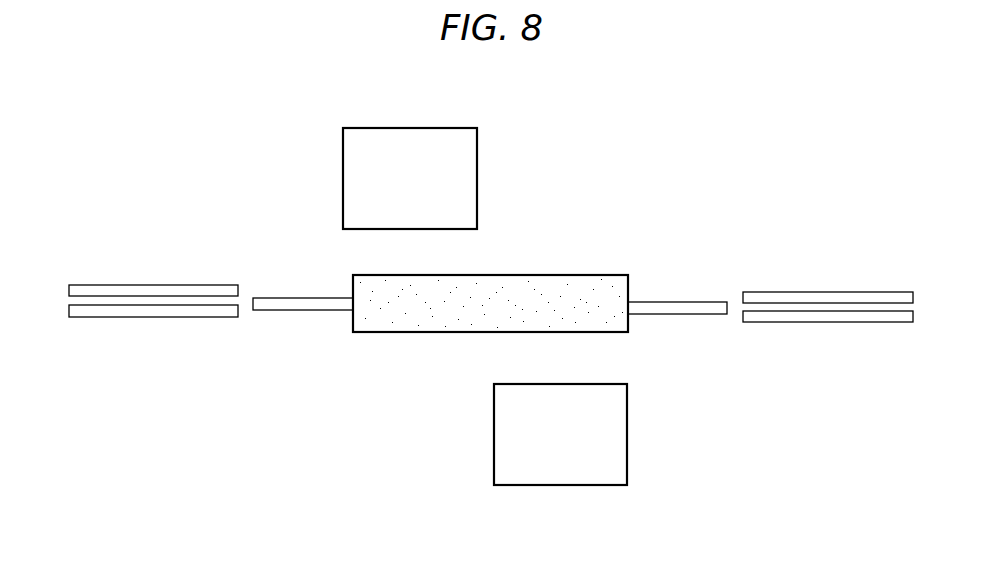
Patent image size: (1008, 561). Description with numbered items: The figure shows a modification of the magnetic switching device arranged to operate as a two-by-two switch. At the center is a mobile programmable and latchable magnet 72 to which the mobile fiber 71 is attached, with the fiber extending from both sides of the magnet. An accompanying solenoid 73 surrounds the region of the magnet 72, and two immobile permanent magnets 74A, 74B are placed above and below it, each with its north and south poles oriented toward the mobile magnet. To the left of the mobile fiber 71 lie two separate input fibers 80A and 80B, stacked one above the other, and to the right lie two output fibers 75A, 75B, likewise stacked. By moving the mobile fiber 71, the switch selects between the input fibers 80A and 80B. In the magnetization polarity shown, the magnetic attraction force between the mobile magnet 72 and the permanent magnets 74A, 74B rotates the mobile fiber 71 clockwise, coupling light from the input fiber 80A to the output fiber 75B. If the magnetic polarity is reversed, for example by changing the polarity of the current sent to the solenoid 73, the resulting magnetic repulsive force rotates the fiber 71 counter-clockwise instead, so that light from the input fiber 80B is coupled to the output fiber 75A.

The mobile fiber 71 is at (272, 298).
The mobile programmable and latchable magnet 72 is at (633, 290).
The solenoid 73 is at (640, 354).
The immobile permanent magnet 74A is at (384, 128).
The immobile permanent magnet 74B is at (627, 438).
The output fiber 75A is at (830, 292).
The output fiber 75B is at (830, 322).
The input fiber 80A is at (152, 285).
The input fiber 80B is at (152, 317).